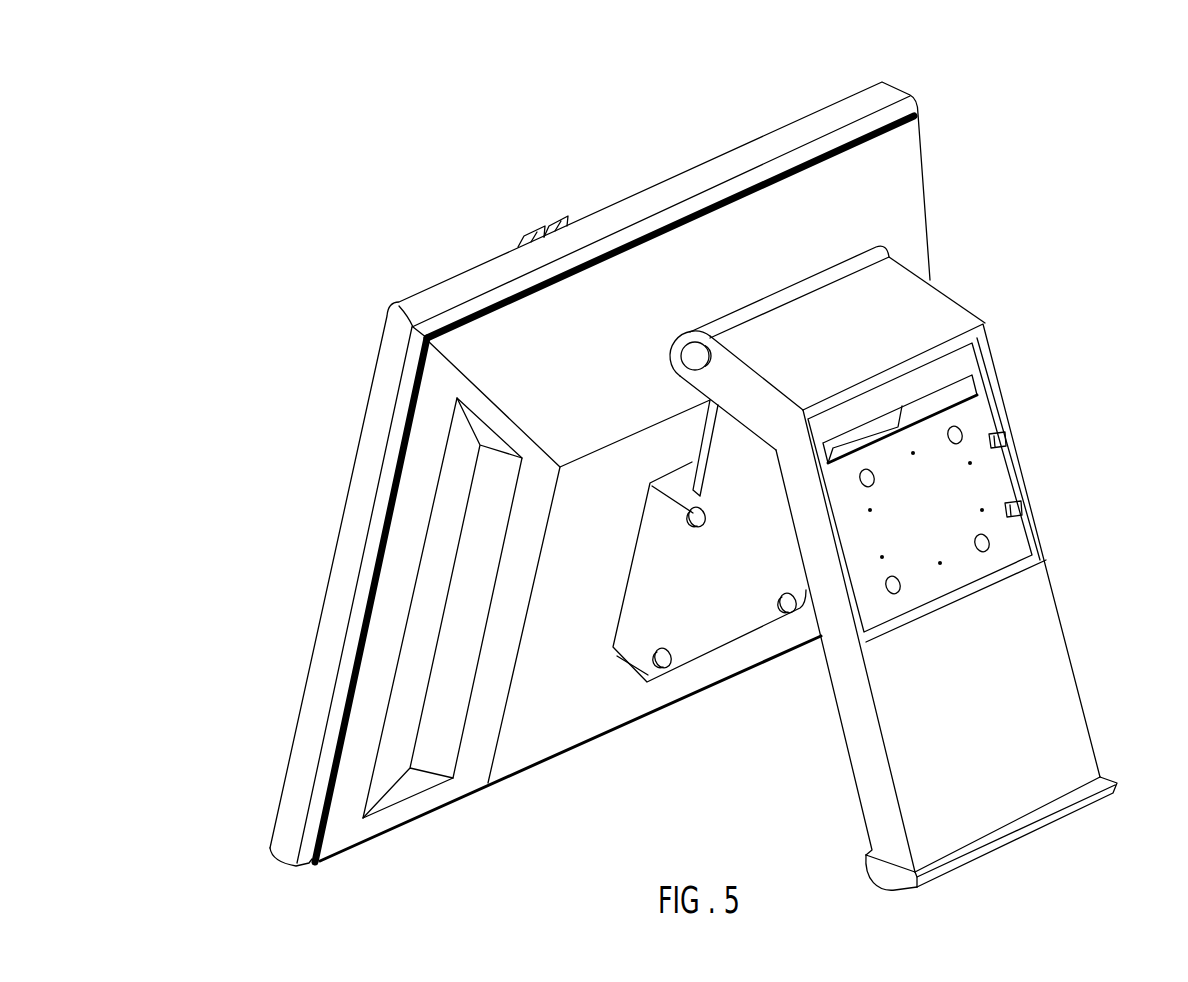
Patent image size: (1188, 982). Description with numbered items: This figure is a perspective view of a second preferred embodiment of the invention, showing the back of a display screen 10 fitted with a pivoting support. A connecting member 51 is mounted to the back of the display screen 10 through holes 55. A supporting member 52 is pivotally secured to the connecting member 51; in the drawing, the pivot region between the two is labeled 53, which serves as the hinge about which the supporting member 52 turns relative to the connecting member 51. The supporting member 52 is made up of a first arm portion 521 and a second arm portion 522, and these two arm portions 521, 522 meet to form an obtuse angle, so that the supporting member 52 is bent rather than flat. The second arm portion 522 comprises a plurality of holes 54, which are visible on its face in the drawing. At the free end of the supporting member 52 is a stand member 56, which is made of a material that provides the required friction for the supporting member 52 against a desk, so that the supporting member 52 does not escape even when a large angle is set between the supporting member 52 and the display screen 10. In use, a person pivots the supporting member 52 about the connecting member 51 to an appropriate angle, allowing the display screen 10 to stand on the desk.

The display screen 10 is at (689, 167).
The connecting member 51 is at (732, 647).
The supporting member 52 is at (1001, 301).
The first arm portion 521 is at (897, 282).
The second arm portion 522 is at (1037, 590).
The pivot shaft 53 is at (684, 355).
The holes 54 is at (898, 583).
The holes 55 is at (783, 604).
The stand member 56 is at (984, 853).